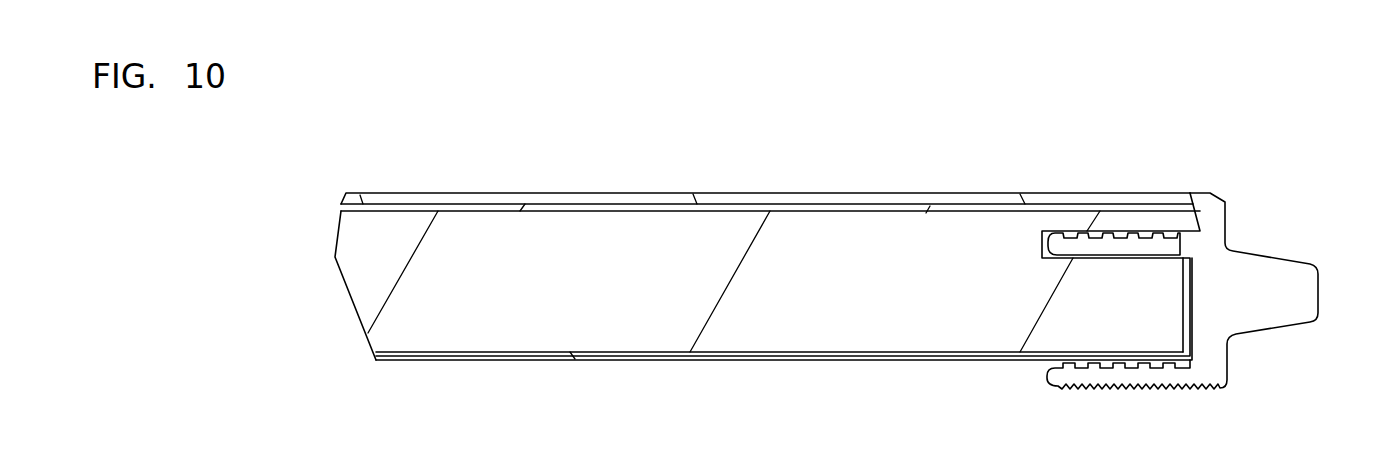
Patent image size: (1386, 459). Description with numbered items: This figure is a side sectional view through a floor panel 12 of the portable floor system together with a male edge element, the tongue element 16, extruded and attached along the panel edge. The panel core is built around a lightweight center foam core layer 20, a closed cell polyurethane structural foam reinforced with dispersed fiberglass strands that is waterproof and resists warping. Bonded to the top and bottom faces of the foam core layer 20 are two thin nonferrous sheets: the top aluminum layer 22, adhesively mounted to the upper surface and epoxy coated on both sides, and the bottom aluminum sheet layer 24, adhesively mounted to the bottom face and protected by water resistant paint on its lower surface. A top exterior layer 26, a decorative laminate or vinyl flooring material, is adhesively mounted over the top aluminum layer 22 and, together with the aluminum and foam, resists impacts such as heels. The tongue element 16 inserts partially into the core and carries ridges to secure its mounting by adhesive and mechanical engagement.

The floor panel 12 is at (1277, 133).
The tongue element 16 is at (1280, 277).
The center foam core layer 20 is at (372, 282).
The top aluminum layer 22 is at (350, 210).
The bottom aluminum sheet layer 24 is at (443, 357).
The top exterior layer 26 is at (893, 198).